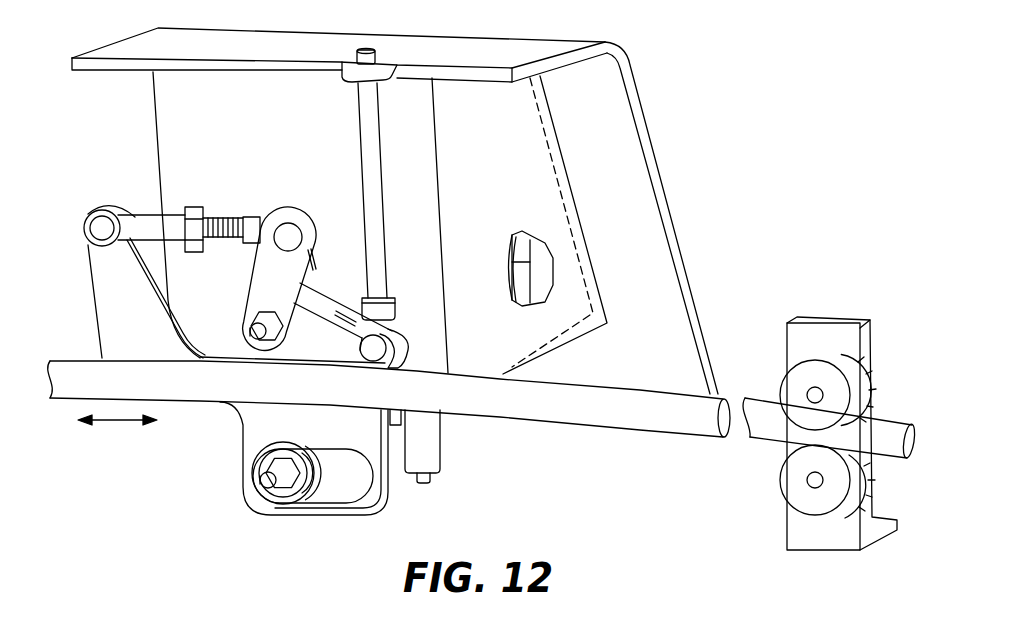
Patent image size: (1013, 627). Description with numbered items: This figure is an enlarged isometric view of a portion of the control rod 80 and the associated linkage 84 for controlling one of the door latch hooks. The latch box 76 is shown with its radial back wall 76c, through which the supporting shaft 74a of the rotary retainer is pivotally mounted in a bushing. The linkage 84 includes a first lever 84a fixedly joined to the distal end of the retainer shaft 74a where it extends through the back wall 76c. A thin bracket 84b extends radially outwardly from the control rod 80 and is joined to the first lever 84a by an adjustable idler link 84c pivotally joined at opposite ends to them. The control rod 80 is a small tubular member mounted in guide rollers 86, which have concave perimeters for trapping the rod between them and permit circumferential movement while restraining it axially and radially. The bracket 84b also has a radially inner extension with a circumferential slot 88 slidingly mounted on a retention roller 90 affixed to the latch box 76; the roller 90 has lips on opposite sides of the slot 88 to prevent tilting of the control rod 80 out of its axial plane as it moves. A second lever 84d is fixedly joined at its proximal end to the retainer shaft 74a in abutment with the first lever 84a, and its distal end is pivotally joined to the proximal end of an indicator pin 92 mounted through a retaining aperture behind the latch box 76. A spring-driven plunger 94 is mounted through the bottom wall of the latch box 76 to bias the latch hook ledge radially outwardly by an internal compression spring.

The latch box 76 is at (552, 187).
The radial back wall 76c is at (210, 140).
The control rod 80 is at (697, 420).
The linkage 84 is at (312, 178).
The first lever 84a is at (312, 258).
The thin bracket 84b is at (145, 326).
The adjustable idler link 84c is at (233, 212).
The second lever 84d is at (338, 306).
The supporting shaft 74a is at (253, 335).
The guide rollers 86 is at (855, 372).
The circumferential slot 88 is at (327, 489).
The retention roller 90 is at (287, 490).
The indicator pin 92 is at (382, 145).
The spring-driven plunger 94 is at (440, 446).